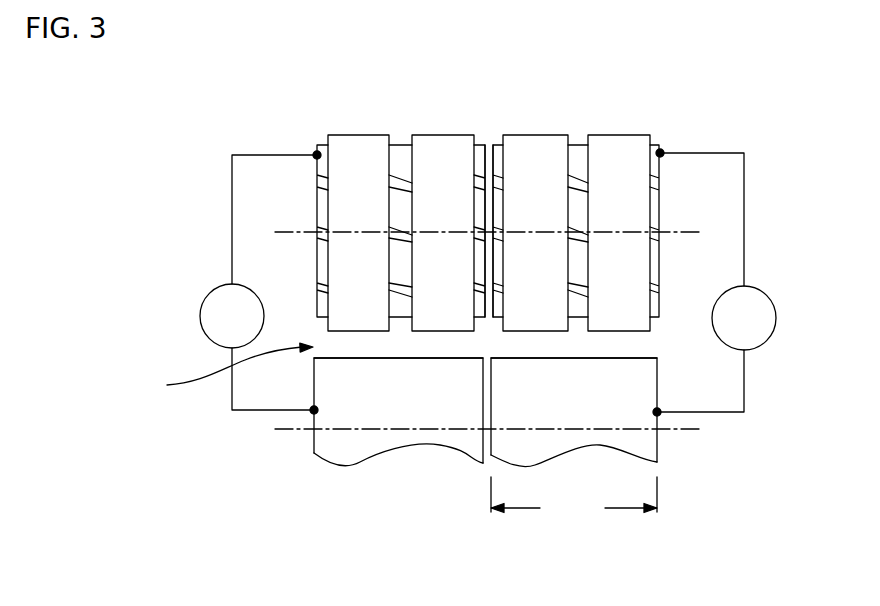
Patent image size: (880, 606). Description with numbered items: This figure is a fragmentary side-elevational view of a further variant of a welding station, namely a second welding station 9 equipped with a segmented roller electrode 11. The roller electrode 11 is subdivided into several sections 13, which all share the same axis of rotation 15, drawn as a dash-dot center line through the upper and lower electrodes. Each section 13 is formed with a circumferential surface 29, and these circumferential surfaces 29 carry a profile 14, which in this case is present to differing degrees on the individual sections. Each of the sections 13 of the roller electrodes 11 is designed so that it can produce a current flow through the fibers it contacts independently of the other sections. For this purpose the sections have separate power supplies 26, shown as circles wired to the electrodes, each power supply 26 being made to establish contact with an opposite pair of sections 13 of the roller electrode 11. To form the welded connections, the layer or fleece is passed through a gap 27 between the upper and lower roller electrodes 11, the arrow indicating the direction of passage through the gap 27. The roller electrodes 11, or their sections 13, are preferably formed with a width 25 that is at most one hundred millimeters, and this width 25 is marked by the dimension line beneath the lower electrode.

The second welding station 9 is at (268, 112).
The roller electrode 11 is at (313, 282).
The sections 13 is at (403, 528).
The profile 14 is at (400, 134).
The axis of rotation 15 is at (685, 232).
The width 25 is at (574, 500).
The power supplies 26 is at (210, 323).
The gap 27 is at (217, 370).
The circumferential surfaces 29 is at (530, 148).